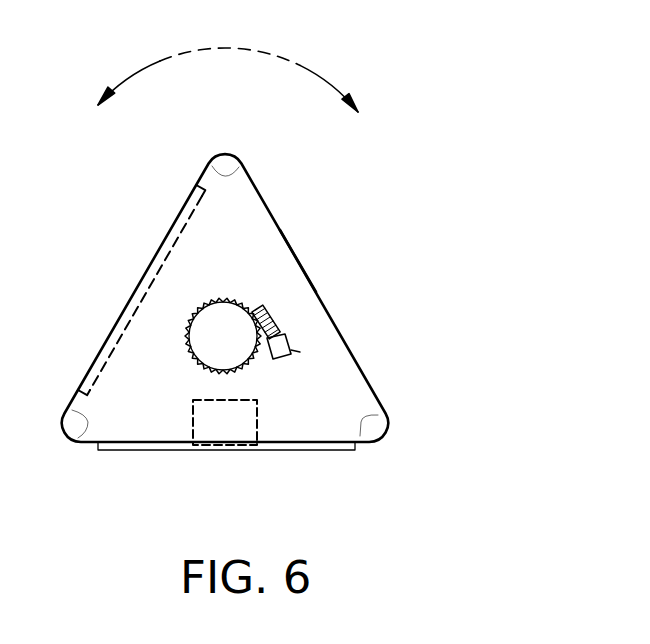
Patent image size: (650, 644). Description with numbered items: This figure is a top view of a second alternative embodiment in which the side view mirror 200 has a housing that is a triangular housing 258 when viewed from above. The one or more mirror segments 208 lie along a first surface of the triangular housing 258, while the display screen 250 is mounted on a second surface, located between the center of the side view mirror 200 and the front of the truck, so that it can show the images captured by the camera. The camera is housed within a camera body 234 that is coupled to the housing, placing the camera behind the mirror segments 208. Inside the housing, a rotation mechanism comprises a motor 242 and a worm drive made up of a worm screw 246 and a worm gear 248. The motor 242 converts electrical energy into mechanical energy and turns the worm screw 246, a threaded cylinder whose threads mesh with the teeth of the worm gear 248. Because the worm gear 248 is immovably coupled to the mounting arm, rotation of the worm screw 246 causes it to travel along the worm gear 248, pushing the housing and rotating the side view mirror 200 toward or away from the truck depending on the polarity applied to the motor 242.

The side view mirror 200 is at (478, 145).
The mirror segments 208 is at (148, 452).
The camera body 234 is at (257, 423).
The motor 242 is at (300, 353).
The worm screw 246 is at (270, 322).
The worm gear 248 is at (228, 298).
The display screen 250 is at (122, 310).
The triangular housing 258 is at (297, 253).